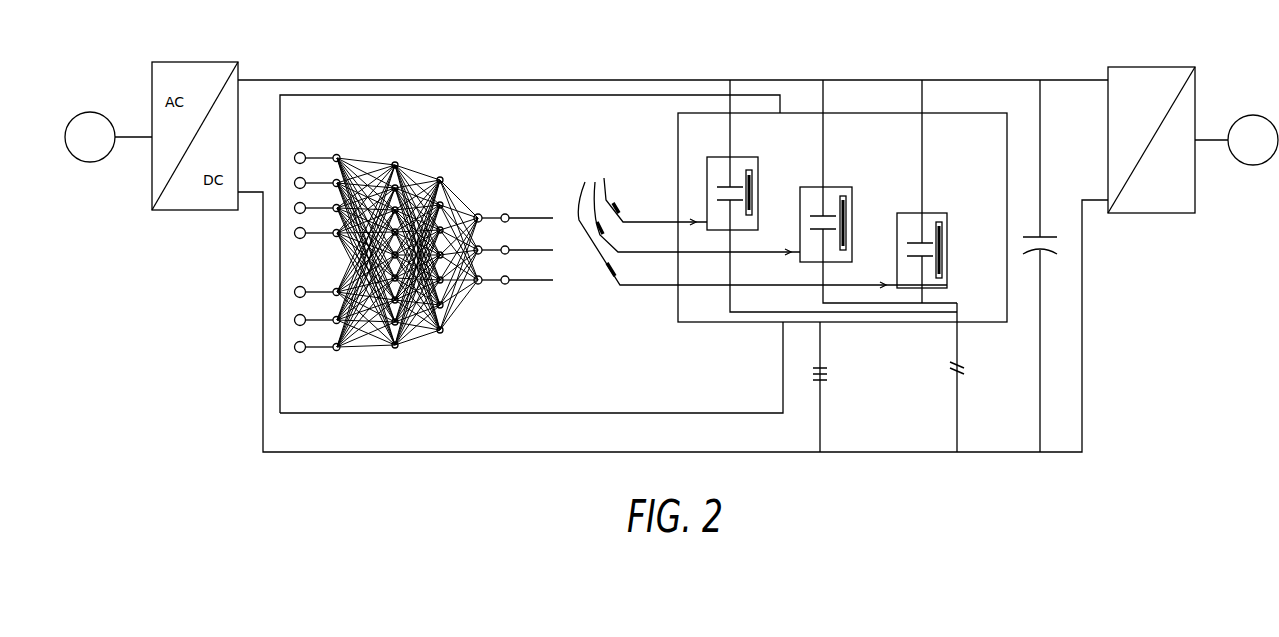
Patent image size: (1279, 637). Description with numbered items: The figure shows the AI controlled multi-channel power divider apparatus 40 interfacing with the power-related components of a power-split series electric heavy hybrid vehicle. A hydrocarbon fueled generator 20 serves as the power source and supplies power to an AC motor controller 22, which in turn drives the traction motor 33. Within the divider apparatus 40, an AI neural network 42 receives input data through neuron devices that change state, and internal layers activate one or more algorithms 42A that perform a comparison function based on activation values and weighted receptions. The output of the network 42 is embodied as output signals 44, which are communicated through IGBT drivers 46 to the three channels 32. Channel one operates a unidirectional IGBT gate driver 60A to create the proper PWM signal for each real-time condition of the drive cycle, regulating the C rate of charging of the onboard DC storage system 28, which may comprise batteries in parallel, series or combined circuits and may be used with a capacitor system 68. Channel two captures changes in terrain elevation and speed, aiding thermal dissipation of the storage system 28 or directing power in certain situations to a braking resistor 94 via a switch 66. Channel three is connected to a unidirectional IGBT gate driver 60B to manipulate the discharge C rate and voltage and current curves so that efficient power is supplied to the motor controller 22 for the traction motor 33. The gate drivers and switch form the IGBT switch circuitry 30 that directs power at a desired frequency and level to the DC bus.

The hydrocarbon fueled generator 20 is at (82, 113).
The AC motor controller 22 is at (1153, 65).
The traction motor 33 is at (1249, 118).
The IGBT switch circuitry 30 is at (842, 217).
The unidirectional IGBT gate driver 60A is at (752, 170).
The unidirectional IGBT gate driver 60B is at (948, 235).
The switch 66 is at (856, 200).
The capacitor system 68 is at (1046, 252).
The onboard DC storage system 28 is at (830, 372).
The braking resistor 94 is at (952, 366).
The channels 32 is at (762, 222).
The multi-channel power divider apparatus 40 is at (304, 152).
The AI neural network 42 is at (478, 217).
The algorithms 42A is at (490, 290).
The output signals 44 is at (504, 213).
The IGBT drivers 46 is at (546, 214).